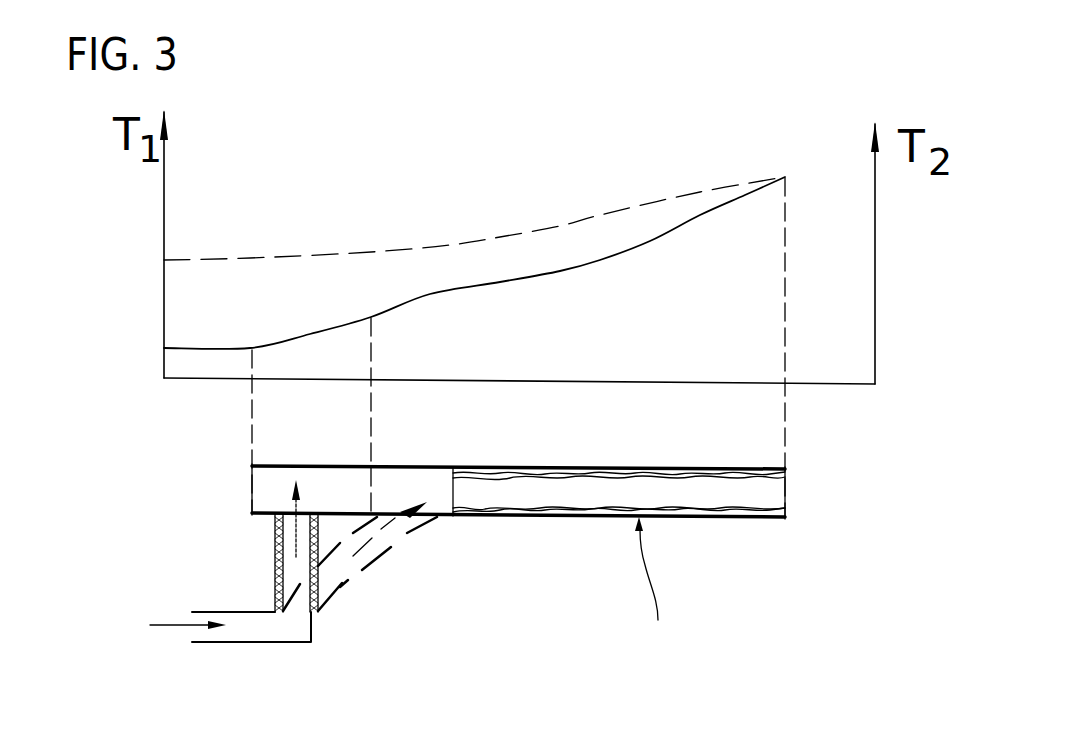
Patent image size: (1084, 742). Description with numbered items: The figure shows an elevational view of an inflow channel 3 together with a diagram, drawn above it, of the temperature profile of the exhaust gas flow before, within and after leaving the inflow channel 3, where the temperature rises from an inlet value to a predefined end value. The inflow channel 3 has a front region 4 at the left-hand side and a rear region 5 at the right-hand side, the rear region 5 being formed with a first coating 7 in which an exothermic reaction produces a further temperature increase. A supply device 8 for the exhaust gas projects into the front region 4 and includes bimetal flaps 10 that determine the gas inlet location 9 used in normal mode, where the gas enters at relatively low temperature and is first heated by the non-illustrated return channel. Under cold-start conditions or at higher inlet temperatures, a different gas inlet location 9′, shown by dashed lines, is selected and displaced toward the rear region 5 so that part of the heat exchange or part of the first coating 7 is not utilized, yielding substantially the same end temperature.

The inflow channel 3 is at (654, 593).
The front region 4 is at (256, 470).
The rear region 5 is at (708, 492).
The first coating 7 is at (520, 518).
The supply device 8 is at (244, 642).
The gas inlet location 9 is at (293, 516).
The gas inlet location 9′ is at (407, 523).
The bimetal flaps 10 is at (274, 605).